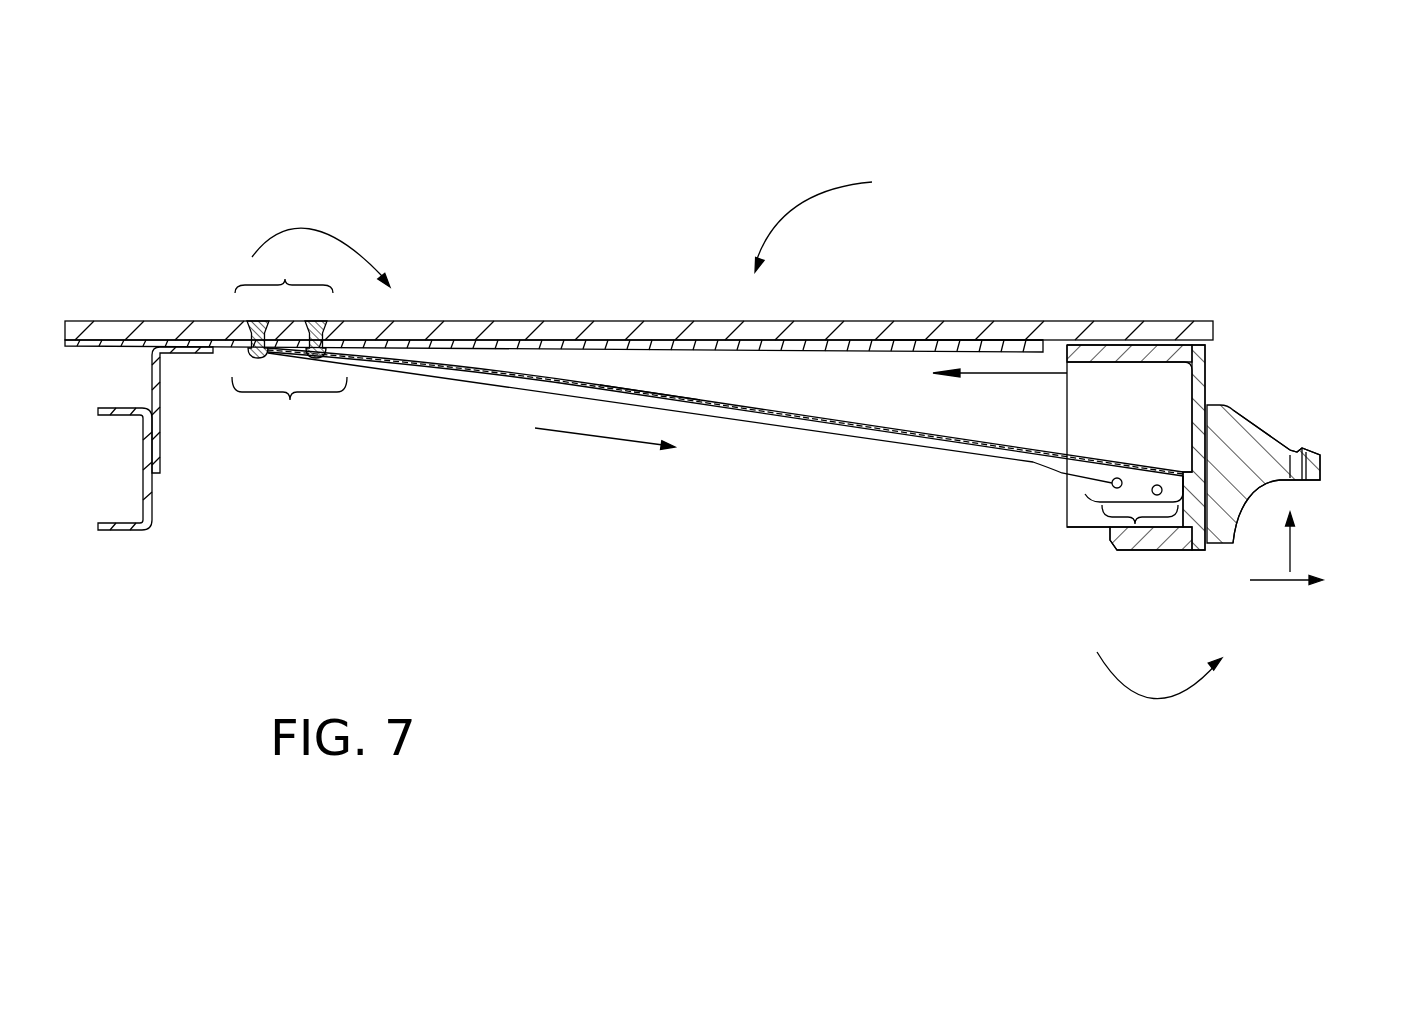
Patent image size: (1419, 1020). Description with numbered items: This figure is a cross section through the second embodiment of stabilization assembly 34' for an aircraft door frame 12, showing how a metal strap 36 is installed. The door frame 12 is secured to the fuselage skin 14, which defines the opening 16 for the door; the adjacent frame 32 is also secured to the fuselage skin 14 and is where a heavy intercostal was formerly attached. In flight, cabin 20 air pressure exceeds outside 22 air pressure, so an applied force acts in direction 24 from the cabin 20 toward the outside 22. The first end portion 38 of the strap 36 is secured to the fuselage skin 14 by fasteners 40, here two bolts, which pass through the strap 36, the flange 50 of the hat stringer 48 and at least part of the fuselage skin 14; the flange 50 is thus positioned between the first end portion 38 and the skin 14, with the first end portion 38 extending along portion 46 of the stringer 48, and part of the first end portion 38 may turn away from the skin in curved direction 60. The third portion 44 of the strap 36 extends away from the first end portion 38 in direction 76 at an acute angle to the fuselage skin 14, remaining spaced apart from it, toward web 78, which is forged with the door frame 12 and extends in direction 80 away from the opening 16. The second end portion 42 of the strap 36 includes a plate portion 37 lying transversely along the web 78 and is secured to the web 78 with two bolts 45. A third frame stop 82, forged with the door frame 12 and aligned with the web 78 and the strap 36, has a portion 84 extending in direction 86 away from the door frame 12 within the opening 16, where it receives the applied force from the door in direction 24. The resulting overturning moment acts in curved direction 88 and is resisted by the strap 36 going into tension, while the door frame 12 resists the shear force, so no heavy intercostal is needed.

The door frame 12 is at (1210, 358).
The fuselage skin 14 is at (815, 321).
The opening 16 is at (1349, 482).
The cabin 20 is at (495, 529).
The outside 22 is at (557, 249).
The direction 24 is at (1292, 553).
The adjacent frame 32 is at (152, 380).
The second embodiment of stabilization assembly 34' is at (836, 220).
The strap 36 is at (647, 390).
The plate portion 37 is at (1150, 480).
The first end portion 38 is at (292, 400).
The fastener 40 is at (316, 322).
The second end portion 42 is at (1135, 525).
The third portion 44 is at (748, 438).
The bolts 45 is at (1062, 473).
The portion of stringer 46 is at (285, 276).
The stringer 48 is at (745, 352).
The flange 50 is at (905, 340).
The curved direction 60 is at (278, 237).
The direction 76 is at (572, 432).
The web 78 is at (1100, 392).
The direction 80 is at (1007, 373).
The third frame stop 82 is at (1247, 405).
The portion of third frame stop 84 is at (1270, 481).
The direction 86 is at (1262, 582).
The curved direction 88 is at (1138, 695).